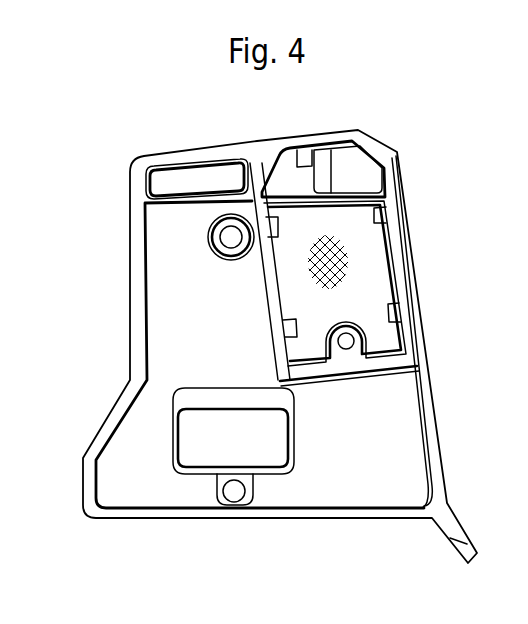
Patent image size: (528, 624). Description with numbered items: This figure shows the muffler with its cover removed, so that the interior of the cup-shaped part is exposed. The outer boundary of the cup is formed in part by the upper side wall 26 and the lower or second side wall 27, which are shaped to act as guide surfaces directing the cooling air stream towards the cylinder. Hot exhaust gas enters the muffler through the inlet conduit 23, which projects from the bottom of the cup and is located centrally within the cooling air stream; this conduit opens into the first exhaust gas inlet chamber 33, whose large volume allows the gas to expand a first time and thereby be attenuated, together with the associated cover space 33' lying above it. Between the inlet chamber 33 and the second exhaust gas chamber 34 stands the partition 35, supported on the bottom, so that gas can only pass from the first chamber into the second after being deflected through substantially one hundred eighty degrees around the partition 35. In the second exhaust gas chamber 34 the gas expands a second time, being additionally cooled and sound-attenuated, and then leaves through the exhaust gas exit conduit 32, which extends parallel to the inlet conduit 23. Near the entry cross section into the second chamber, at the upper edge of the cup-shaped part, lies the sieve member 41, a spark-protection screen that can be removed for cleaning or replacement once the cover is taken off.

The inlet conduit 23 is at (271, 472).
The upper side wall 26 is at (139, 332).
The lower side wall 27 is at (424, 413).
The exhaust gas exit conduit 32 is at (350, 155).
The first exhaust gas inlet chamber 33 is at (286, 354).
The cover space 33' is at (197, 156).
The second exhaust gas chamber 34 is at (370, 290).
The partition 35 is at (268, 285).
The sieve member 41 is at (336, 255).